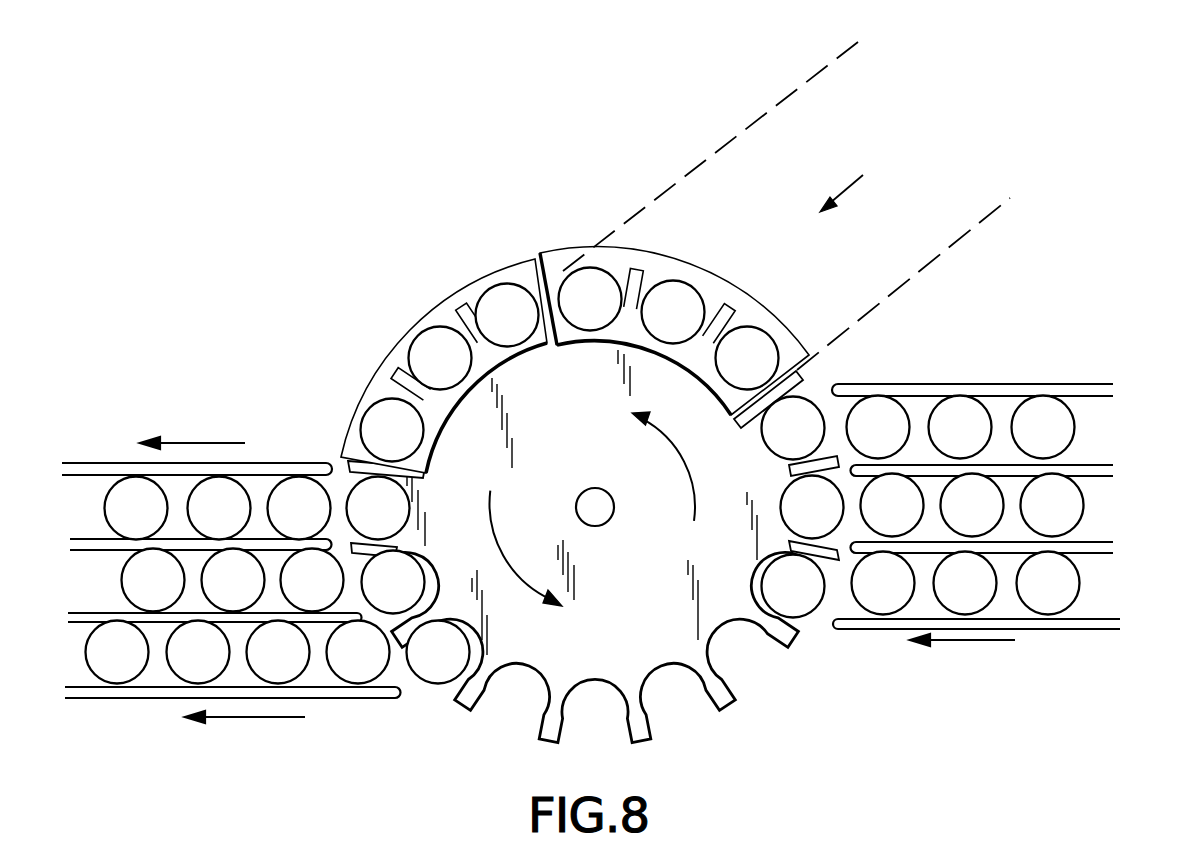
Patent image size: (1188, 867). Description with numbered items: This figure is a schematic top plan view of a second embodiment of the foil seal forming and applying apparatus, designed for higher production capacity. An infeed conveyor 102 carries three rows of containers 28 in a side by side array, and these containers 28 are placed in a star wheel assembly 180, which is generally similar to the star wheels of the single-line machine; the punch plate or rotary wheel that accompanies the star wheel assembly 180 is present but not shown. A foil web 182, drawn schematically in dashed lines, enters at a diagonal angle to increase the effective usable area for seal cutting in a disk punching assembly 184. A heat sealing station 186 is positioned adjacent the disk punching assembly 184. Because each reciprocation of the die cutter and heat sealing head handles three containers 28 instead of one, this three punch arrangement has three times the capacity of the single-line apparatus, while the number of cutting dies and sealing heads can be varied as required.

The containers 28 is at (886, 415).
The infeed conveyor 102 is at (1098, 441).
The star wheel assembly 180 is at (628, 673).
The foil web 182 is at (952, 203).
The disk punching assembly 184 is at (633, 328).
The heat sealing station 186 is at (483, 348).